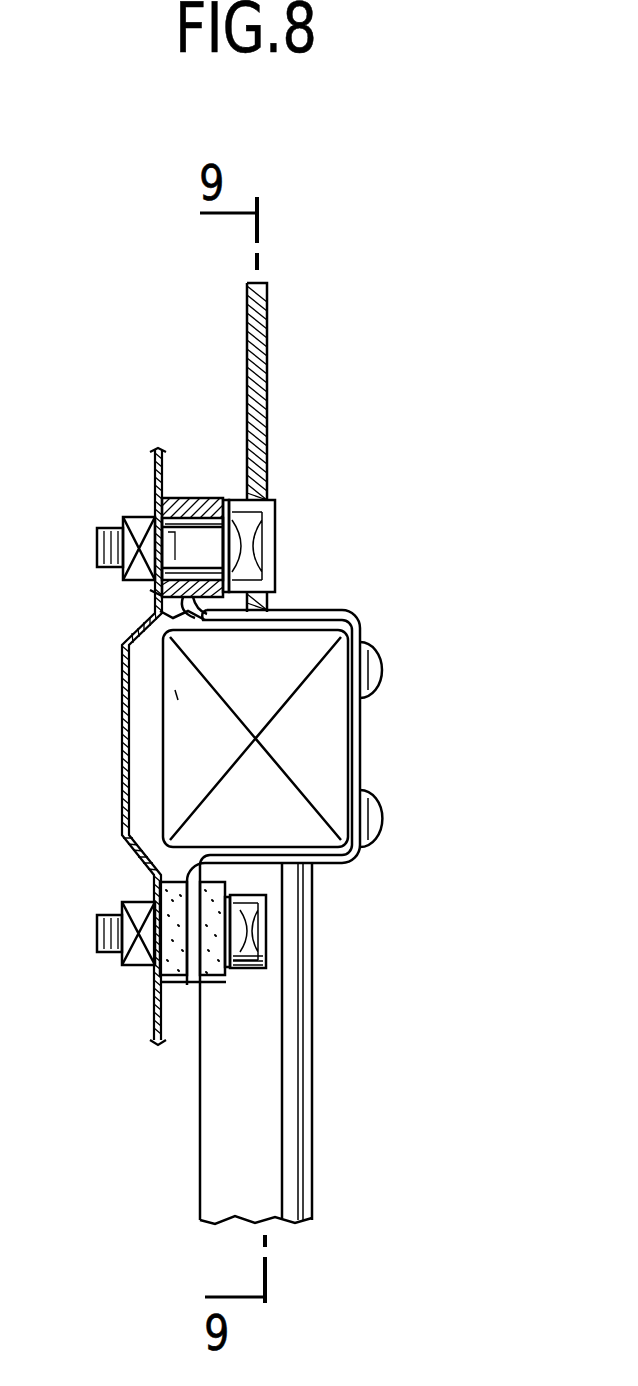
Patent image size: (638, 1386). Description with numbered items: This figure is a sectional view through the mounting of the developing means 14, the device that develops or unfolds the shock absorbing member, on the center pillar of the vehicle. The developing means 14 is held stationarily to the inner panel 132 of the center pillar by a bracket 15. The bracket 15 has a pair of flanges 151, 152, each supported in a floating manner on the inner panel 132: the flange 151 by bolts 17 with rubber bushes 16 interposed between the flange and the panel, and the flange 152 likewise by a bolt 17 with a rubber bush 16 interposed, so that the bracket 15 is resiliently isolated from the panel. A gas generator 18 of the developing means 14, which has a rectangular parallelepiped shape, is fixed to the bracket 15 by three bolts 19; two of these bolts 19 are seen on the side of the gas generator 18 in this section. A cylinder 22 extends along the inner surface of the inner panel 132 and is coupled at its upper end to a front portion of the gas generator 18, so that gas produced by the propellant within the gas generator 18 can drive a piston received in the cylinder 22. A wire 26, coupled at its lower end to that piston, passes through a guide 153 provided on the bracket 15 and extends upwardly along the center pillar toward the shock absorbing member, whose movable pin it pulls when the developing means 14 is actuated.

The developing means 14 is at (383, 555).
The bracket 15 is at (437, 728).
The flange 151 is at (218, 456).
The flange 152 is at (192, 985).
The guide 153 is at (277, 518).
The rubber bush 16 is at (155, 1020).
The bolt 17 is at (108, 958).
The gas generator 18 is at (175, 695).
The bolt 19 is at (377, 818).
The cylinder 22 is at (293, 1074).
The wire 26 is at (265, 365).
The inner panel 132 is at (120, 790).